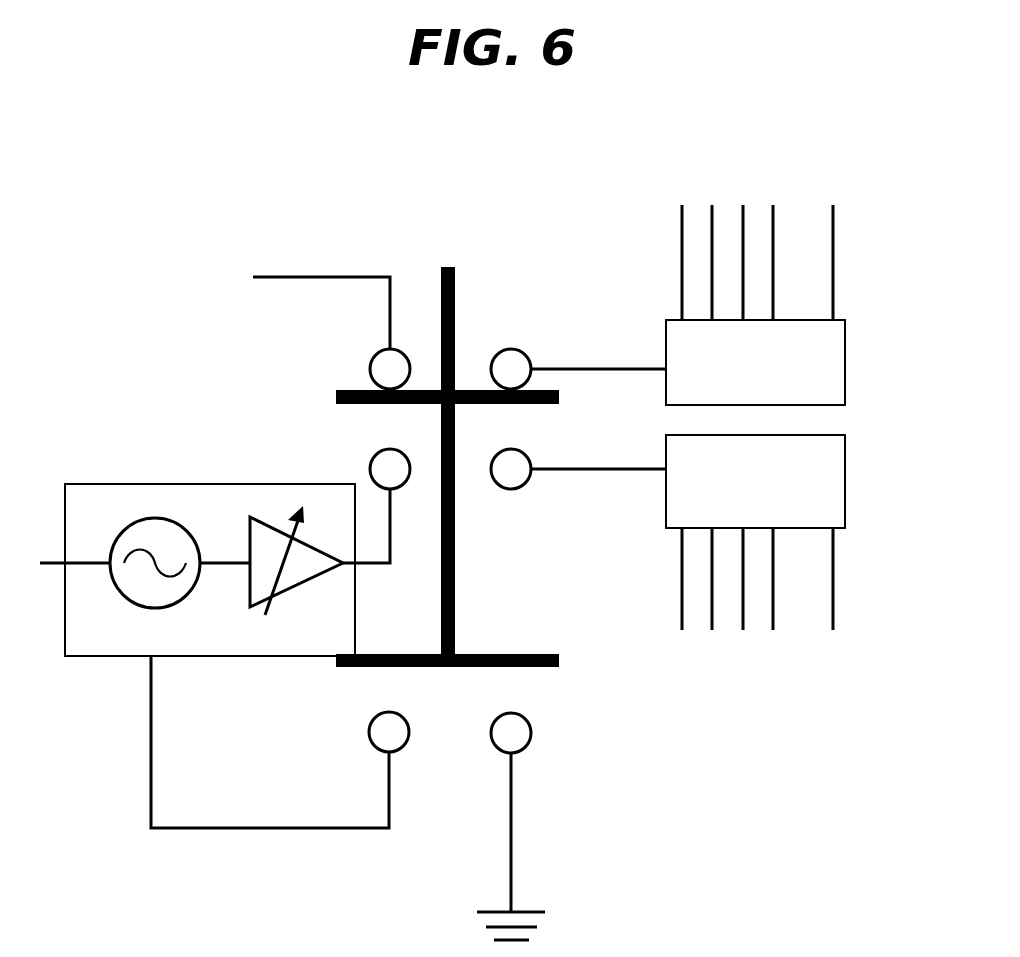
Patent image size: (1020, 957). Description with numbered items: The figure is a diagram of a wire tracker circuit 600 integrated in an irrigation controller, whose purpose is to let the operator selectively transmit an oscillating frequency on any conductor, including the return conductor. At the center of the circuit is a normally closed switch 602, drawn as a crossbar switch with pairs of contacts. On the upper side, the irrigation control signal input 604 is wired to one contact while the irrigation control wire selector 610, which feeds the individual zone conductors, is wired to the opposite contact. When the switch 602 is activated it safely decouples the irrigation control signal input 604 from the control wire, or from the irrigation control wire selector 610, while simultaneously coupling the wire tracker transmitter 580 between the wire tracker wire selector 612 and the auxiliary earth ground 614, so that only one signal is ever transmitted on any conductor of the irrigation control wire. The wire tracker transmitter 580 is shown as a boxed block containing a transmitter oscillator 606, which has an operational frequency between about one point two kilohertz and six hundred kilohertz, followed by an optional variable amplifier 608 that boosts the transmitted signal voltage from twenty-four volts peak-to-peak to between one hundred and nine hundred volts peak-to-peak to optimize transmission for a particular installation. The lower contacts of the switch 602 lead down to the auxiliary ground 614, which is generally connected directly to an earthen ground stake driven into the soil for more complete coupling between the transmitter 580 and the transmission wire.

The wire tracker circuit 600 is at (507, 185).
The normally closed switch 602 is at (336, 395).
The irrigation control signal input 604 is at (238, 282).
The wire tracker transmitter 580 is at (215, 570).
The transmitter oscillator 606 is at (130, 603).
The variable amplifier 608 is at (292, 592).
The irrigation control wire selector 610 is at (688, 268).
The wire tracker wire selector 612 is at (688, 569).
The auxiliary earth ground 614 is at (513, 794).